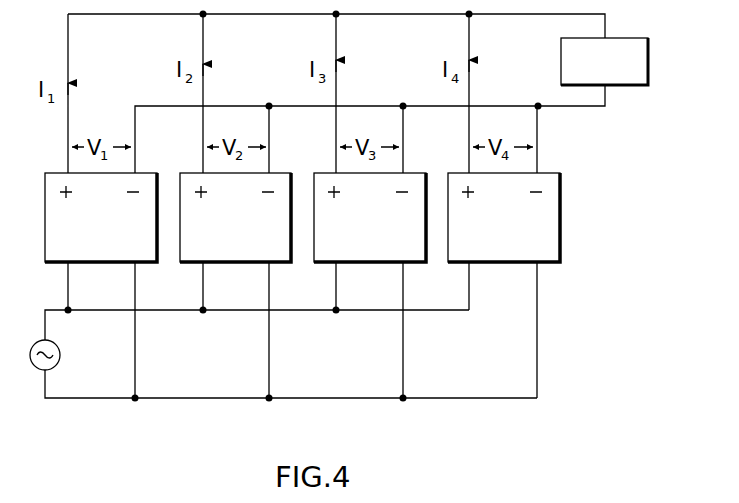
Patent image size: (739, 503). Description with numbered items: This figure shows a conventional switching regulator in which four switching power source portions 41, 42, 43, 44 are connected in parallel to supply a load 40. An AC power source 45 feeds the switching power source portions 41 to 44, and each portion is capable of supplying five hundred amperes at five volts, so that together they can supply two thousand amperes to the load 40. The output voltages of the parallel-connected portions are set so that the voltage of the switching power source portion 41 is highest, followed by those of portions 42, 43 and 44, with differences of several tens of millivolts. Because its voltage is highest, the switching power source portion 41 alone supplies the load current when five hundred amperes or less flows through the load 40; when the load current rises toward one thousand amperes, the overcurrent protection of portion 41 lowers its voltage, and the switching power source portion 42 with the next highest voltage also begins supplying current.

The load 40 is at (637, 86).
The switching power source portion 41 is at (96, 264).
The switching power source portion 42 is at (236, 264).
The switching power source portion 43 is at (375, 264).
The switching power source portion 44 is at (508, 264).
The AC power source 45 is at (61, 351).